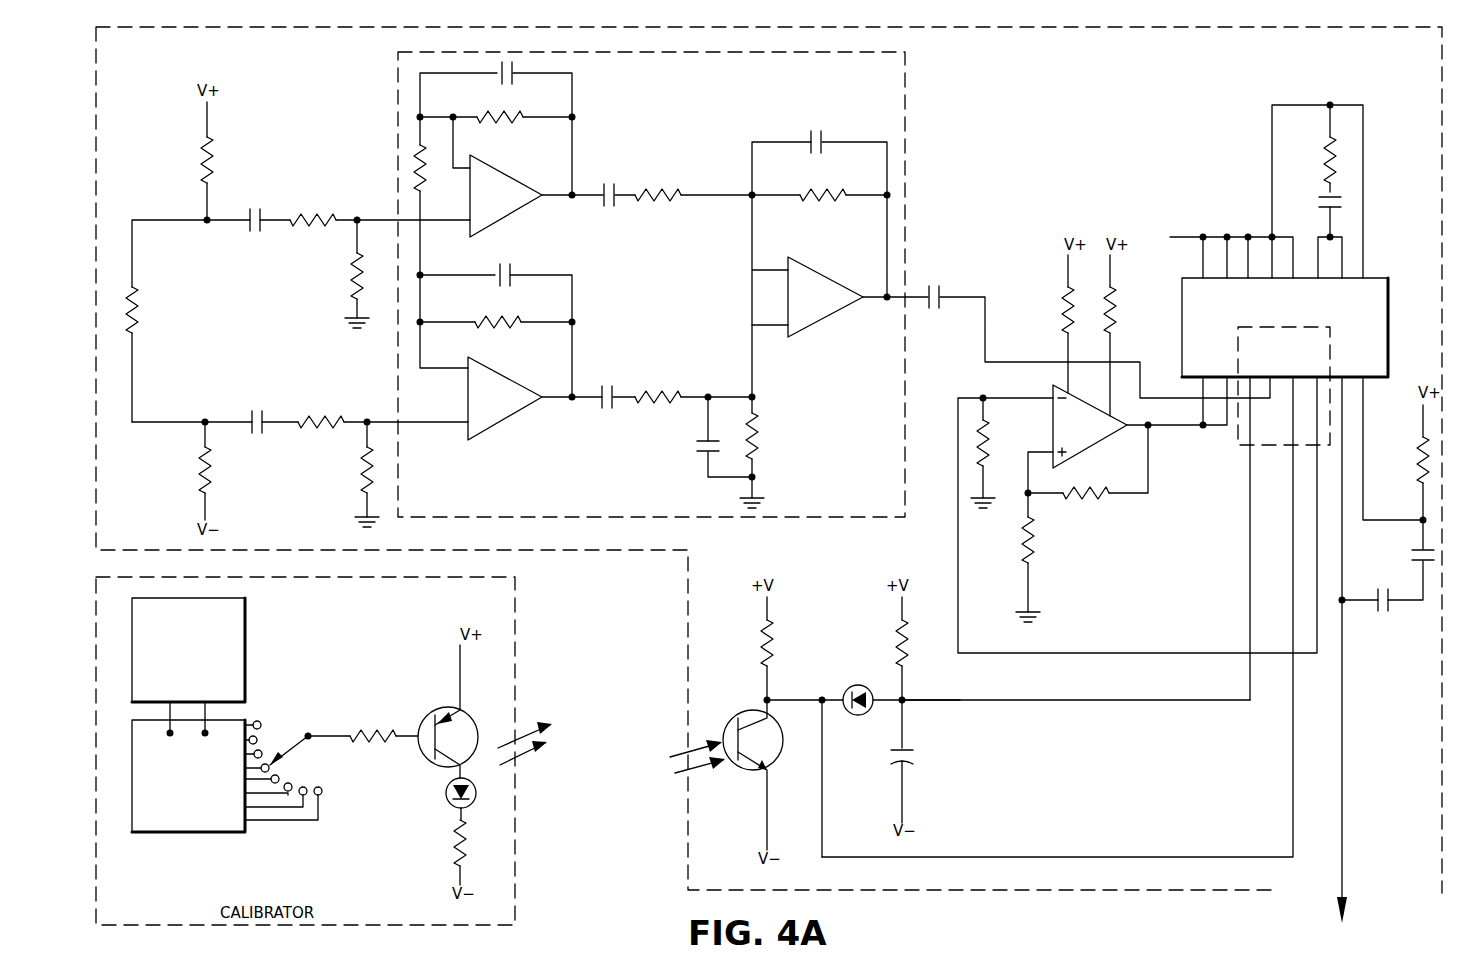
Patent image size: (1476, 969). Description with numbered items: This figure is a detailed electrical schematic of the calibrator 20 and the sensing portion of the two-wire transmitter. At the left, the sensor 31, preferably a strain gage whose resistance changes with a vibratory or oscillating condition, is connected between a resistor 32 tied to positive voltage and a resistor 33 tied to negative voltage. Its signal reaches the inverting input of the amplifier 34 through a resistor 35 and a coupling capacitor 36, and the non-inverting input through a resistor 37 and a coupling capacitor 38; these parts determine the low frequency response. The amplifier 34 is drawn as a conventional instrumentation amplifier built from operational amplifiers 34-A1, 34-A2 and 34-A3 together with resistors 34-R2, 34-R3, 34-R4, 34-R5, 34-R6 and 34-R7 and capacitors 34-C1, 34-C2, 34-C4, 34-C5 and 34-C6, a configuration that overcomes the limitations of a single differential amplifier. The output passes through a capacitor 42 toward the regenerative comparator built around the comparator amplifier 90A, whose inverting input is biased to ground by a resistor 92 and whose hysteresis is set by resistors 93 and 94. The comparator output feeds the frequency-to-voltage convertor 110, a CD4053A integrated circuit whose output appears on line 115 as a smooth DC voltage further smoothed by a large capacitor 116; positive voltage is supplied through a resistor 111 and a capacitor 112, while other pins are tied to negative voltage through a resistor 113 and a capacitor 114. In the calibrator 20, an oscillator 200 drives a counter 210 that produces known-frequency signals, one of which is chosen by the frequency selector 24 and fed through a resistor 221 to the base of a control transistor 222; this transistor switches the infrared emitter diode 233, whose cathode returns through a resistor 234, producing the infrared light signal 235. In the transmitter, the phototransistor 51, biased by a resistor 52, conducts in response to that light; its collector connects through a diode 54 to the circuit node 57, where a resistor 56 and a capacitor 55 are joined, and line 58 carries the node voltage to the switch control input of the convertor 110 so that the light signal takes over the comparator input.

The calibrator 20 is at (528, 873).
The frequency selector 24 is at (293, 713).
The sensor 31 is at (139, 318).
The resistor 32 is at (214, 160).
The resistor 33 is at (212, 468).
The amplifier 34 is at (906, 112).
The capacitor 34-C1 is at (516, 62).
The resistor 34-R2 is at (508, 110).
The operational amplifier 34-A1 is at (486, 158).
The resistor 34-R3 is at (608, 183).
The resistor 34-R4 is at (657, 213).
The capacitor 34-C2 is at (512, 272).
The operational amplifier 34-A2 is at (478, 440).
The capacitor 34-C4 is at (607, 373).
The resistor 34-R5 is at (660, 410).
The capacitor 34-C5 is at (696, 455).
The capacitor 34-C6 is at (805, 125).
The resistor 34-R6 is at (839, 188).
The operational amplifier 34-A3 is at (830, 334).
The resistor 34-R7 is at (762, 434).
The resistor 35 is at (312, 212).
The coupling capacitor 36 is at (254, 232).
The resistor 37 is at (326, 411).
The coupling capacitor 38 is at (257, 410).
The capacitor 42 is at (935, 284).
The phototransistor 51 is at (740, 781).
The resistor 52 is at (744, 640).
The diode 54 is at (860, 714).
The capacitor 55 is at (917, 754).
The resistor 56 is at (884, 645).
The circuit node 57 is at (912, 700).
The line 58 is at (1156, 705).
The comparator amplifier 90A is at (1088, 449).
The resistor 92 is at (991, 439).
The resistor 93 is at (1106, 504).
The resistor 94 is at (1039, 545).
The frequency-to-voltage convertor 110 is at (1182, 349).
The resistor 111 is at (1414, 465).
The capacitor 112 is at (1412, 555).
The resistor 113 is at (1316, 159).
The capacitor 114 is at (1343, 195).
The line 115 is at (1342, 810).
The capacitor 116 is at (1384, 614).
The oscillator 200 is at (246, 631).
The counter 210 is at (178, 839).
The resistor 221 is at (368, 728).
The control transistor 222 is at (432, 708).
The infrared emitter diode 233 is at (444, 795).
The resistor 234 is at (450, 845).
The infrared light signal 235 is at (668, 749).